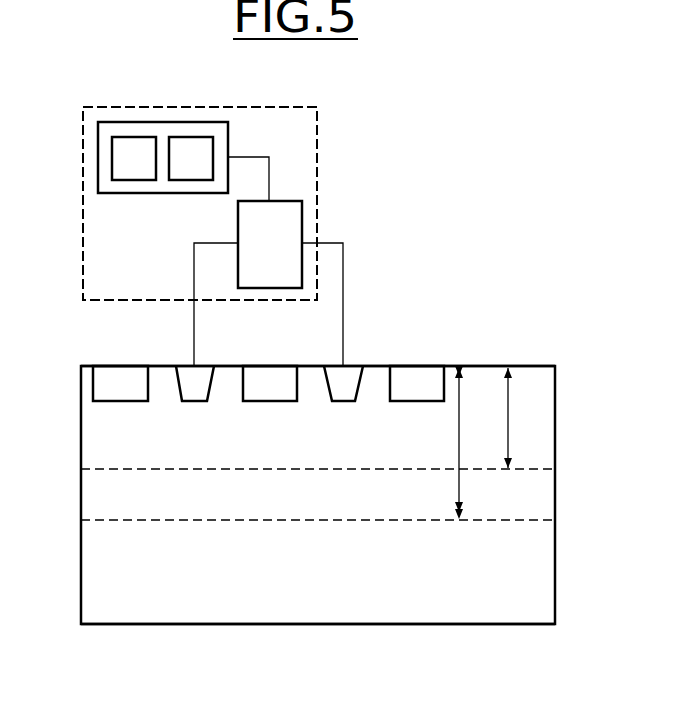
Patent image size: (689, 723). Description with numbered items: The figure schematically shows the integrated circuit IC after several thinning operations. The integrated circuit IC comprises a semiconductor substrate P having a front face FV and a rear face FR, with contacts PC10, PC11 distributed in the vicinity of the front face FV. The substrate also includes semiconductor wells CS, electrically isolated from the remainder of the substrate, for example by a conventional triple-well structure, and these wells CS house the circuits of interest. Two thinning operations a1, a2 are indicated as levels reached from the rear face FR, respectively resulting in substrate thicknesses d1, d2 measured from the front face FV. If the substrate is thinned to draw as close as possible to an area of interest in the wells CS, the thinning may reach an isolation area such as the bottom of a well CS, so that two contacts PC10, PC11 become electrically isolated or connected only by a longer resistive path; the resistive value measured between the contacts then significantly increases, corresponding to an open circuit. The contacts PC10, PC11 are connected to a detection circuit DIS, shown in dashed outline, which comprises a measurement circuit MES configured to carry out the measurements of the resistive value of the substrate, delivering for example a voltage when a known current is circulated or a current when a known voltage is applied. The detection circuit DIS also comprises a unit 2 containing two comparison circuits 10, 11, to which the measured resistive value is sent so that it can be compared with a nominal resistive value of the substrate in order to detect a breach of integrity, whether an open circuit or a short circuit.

The display/control device 2 is at (161, 118).
The comparison circuit 10 is at (134, 158).
The comparison circuit 11 is at (191, 158).
The measurement circuit MES is at (270, 244).
The detection circuit DIS is at (78, 180).
The contact PC10 is at (198, 380).
The contact PC11 is at (347, 380).
The semiconductor well CS is at (268, 383).
The front face FV is at (521, 364).
The rear face FR is at (507, 632).
The integrated circuit IC is at (350, 492).
The substrate P is at (318, 495).
The thinning operation a1 is at (520, 520).
The thinning operation a2 is at (520, 469).
The substrate thickness d1 is at (445, 443).
The substrate thickness d2 is at (493, 418).